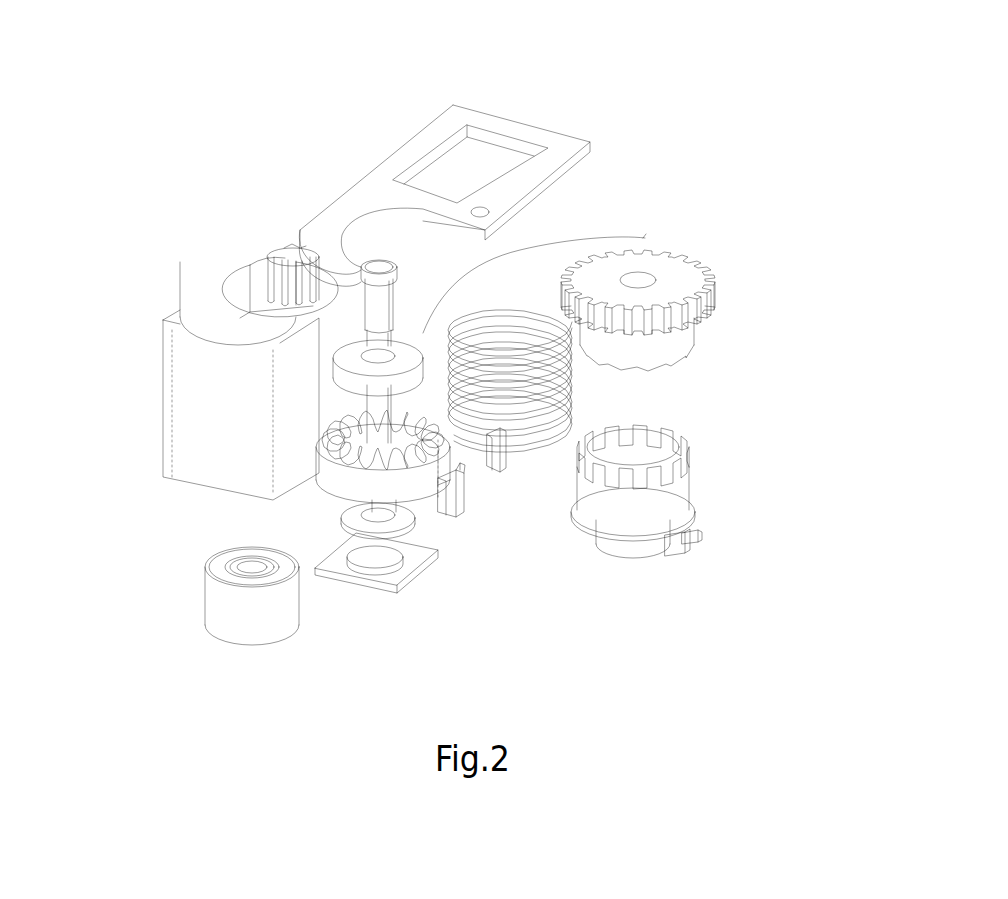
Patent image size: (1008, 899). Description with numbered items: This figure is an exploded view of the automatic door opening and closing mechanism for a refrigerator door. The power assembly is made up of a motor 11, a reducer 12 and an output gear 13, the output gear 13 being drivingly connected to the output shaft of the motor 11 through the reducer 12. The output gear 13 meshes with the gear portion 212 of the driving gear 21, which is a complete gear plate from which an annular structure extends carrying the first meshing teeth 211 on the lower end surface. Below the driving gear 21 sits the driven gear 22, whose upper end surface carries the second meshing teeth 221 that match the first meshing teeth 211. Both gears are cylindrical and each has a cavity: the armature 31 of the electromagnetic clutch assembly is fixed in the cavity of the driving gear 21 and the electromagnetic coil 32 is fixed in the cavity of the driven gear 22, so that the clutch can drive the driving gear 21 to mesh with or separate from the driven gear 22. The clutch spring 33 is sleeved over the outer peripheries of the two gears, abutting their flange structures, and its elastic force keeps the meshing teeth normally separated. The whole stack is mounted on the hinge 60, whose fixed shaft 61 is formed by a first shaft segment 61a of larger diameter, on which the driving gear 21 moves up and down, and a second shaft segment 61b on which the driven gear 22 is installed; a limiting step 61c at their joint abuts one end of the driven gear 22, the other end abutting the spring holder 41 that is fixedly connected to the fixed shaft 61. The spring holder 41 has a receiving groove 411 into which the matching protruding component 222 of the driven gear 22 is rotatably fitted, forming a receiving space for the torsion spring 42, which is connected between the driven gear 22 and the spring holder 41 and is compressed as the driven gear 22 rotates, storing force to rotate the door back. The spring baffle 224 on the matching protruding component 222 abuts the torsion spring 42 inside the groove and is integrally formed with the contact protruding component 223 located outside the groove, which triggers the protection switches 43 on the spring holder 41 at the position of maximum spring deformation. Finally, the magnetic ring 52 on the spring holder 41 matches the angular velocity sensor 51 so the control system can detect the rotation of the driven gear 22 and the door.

The motor 11 is at (180, 368).
The reducer 12 is at (198, 287).
The output gear 13 is at (290, 258).
The driving gear 21 is at (696, 316).
The first meshing teeth 211 is at (650, 358).
The gear portion 212 is at (692, 275).
The driven gear 22 is at (694, 534).
The second meshing teeth 221 is at (660, 445).
The matching protruding component 222 is at (630, 547).
The contact protruding component 223 is at (695, 535).
The spring baffle 224 is at (680, 545).
The armature 31 is at (645, 238).
The electromagnetic coil 32 is at (268, 605).
The clutch spring 33 is at (528, 420).
The spring holder 41 is at (300, 528).
The receiving groove 411 is at (404, 458).
The torsion spring 42 is at (340, 484).
The protection switches 43 is at (500, 472).
The angular velocity sensor 51 is at (358, 568).
The magnetic ring 52 is at (403, 522).
The hinge 60 is at (420, 150).
The fixed shaft 61 is at (282, 273).
The first shaft segment 61a is at (380, 330).
The second shaft segment 61b is at (294, 254).
The limiting step 61c is at (374, 305).